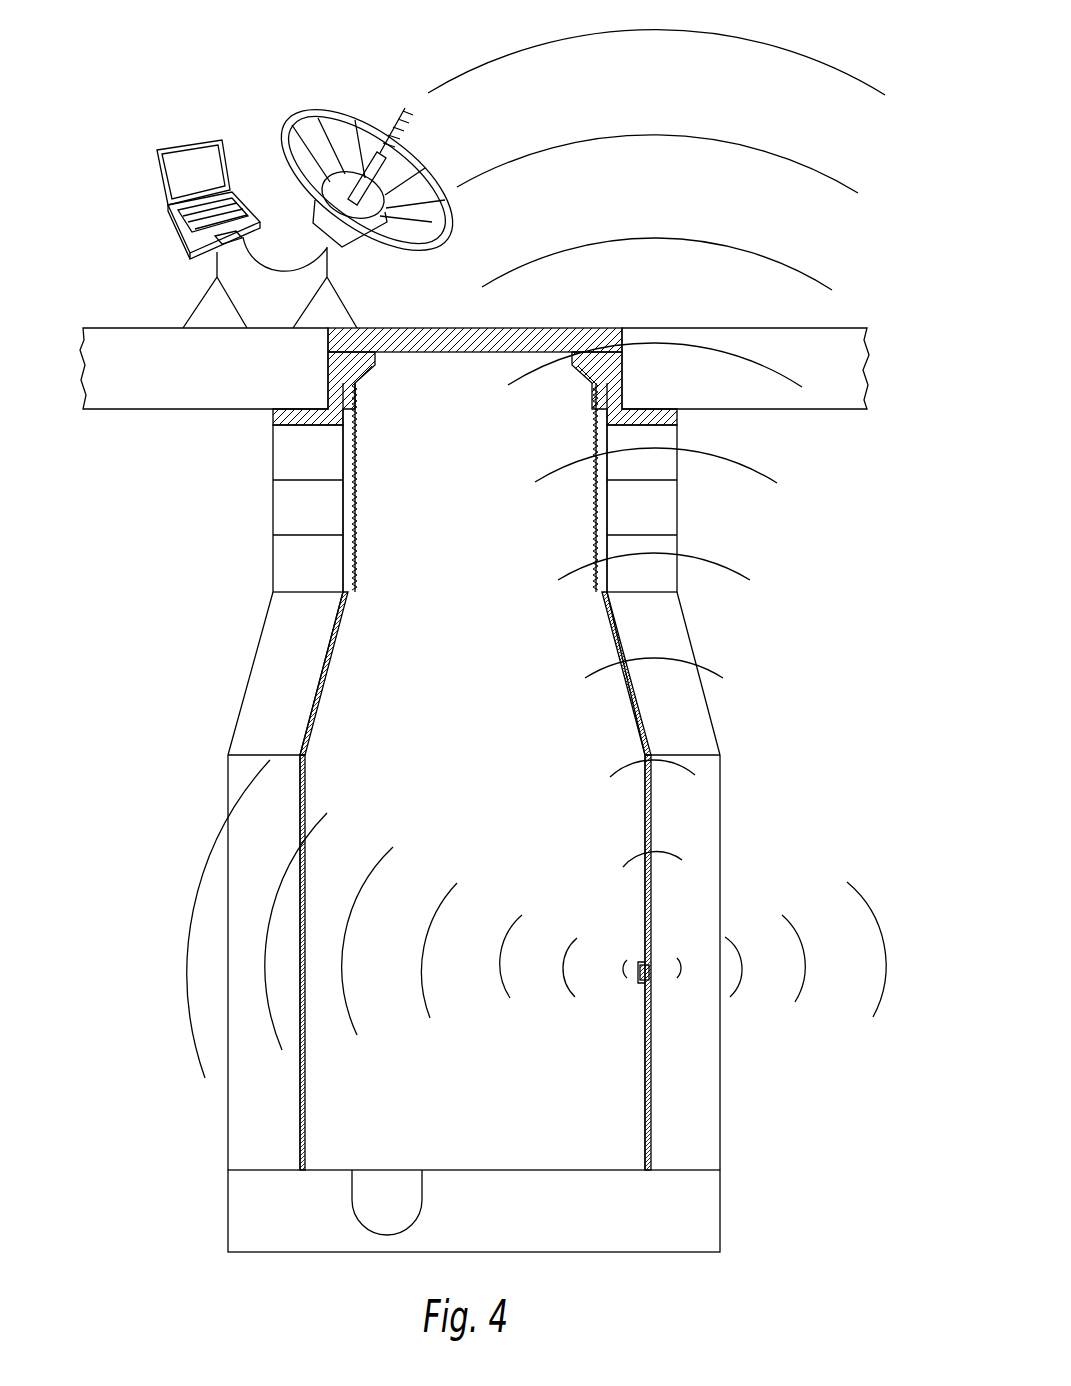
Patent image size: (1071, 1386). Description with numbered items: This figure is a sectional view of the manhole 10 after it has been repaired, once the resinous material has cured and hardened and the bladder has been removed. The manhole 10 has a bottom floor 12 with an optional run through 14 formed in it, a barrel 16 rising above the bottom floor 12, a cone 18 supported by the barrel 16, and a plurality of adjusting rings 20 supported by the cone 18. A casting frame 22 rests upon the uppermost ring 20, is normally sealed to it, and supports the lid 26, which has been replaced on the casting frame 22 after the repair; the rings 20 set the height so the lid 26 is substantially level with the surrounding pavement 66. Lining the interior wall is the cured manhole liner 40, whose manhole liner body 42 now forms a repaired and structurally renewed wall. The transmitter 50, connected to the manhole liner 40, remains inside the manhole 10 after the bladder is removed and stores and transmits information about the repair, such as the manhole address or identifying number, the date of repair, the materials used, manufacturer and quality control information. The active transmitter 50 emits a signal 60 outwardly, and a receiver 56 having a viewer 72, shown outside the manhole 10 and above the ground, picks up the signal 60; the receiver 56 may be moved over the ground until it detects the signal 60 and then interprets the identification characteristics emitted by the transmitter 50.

The manhole 10 is at (633, 290).
The bottom floor 12 is at (710, 1210).
The run through 14 is at (397, 1208).
The barrel 16 is at (713, 840).
The cone 18 is at (683, 650).
The adjusting rings 20 is at (278, 449).
The casting frame 22 is at (678, 418).
The lid 26 is at (546, 328).
The manhole liner 40 is at (475, 768).
The manhole liner body 42 is at (334, 765).
The transmitter 50 is at (645, 962).
The receiver 56 is at (300, 120).
The signal 60 is at (817, 37).
The pavement 66 is at (112, 328).
The viewer 72 is at (163, 150).